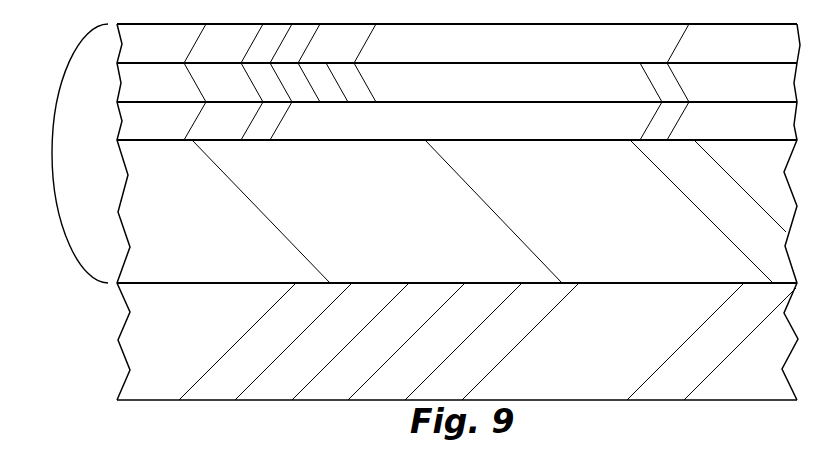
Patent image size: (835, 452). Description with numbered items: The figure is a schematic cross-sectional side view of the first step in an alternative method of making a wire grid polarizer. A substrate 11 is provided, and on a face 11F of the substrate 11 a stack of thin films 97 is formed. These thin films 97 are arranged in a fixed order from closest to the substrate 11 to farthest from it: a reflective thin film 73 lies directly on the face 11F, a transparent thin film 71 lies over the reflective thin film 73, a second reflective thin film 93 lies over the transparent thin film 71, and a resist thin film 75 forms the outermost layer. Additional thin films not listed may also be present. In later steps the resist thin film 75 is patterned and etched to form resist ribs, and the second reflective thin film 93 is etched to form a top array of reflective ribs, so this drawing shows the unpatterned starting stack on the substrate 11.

The resist thin film 75 is at (457, 43).
The second reflective thin film 93 is at (457, 82).
The transparent thin film 71 is at (457, 121).
The reflective thin film 73 is at (489, 211).
The substrate 11 is at (487, 341).
The face of the substrate 11F is at (702, 286).
The thin films 97 is at (52, 175).